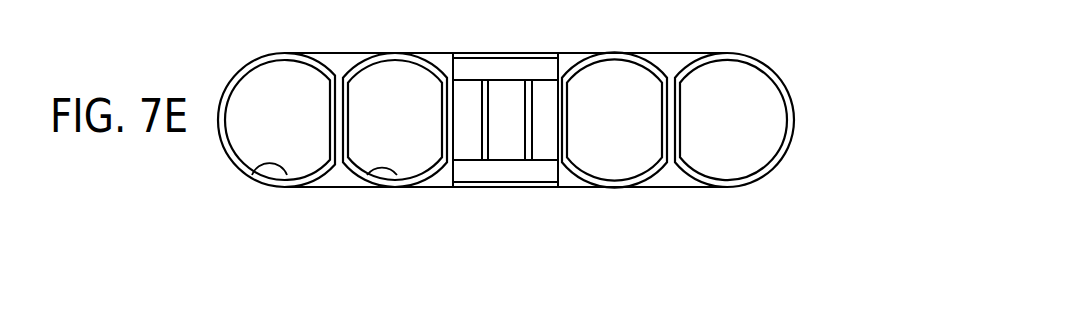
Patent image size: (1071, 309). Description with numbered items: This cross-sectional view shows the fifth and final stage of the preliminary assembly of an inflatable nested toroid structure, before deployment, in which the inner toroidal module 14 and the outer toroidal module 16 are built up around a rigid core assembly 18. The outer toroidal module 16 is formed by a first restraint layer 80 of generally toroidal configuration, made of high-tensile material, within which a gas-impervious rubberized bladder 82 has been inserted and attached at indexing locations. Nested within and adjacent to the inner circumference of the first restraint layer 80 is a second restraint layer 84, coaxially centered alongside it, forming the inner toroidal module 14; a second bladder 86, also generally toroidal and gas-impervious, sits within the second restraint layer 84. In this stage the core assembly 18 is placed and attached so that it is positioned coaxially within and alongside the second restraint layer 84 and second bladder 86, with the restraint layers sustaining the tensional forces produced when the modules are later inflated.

The inner toroidal module 14 is at (615, 187).
The outer toroidal module 16 is at (727, 187).
The core assembly 18 is at (524, 56).
The first restraint layer 80 is at (313, 52).
The bladder 82 is at (258, 168).
The second restraint layer 84 is at (438, 55).
The second bladder 86 is at (367, 168).